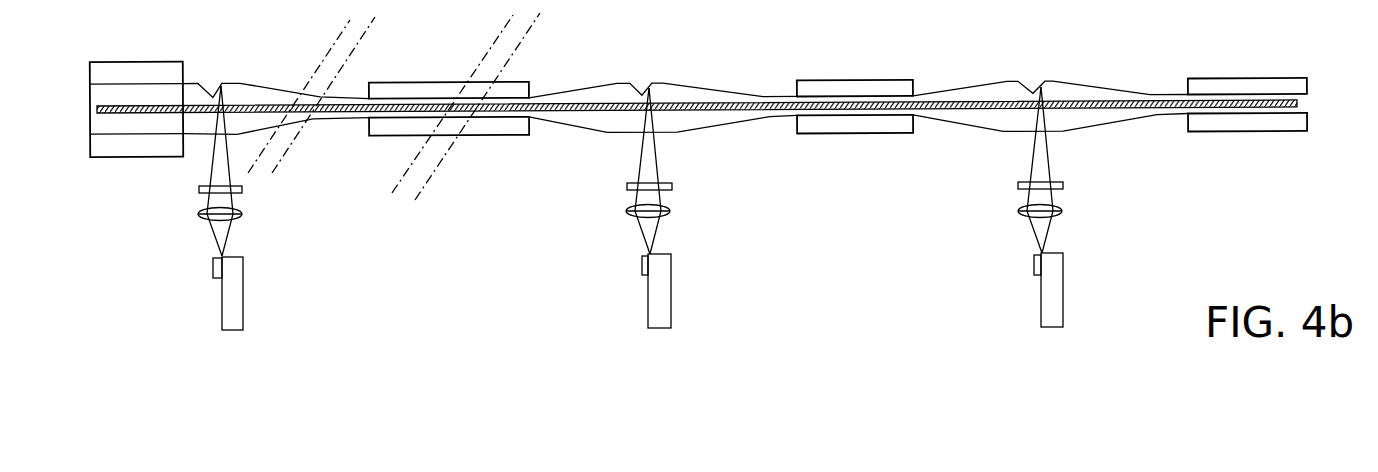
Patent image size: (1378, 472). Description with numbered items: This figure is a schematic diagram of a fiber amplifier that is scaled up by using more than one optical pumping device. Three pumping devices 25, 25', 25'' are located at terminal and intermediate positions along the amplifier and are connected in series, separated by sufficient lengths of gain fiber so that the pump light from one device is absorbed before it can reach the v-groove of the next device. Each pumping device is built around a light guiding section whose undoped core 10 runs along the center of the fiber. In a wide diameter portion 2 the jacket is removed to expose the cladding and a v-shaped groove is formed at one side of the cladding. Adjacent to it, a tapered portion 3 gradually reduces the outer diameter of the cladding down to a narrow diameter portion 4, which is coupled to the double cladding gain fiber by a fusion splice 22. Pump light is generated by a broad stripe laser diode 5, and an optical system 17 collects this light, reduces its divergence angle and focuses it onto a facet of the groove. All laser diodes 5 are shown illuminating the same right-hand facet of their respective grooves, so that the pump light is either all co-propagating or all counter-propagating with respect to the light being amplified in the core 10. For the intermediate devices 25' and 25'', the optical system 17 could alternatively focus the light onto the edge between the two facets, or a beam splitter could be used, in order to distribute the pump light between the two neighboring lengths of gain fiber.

The core 10 is at (152, 113).
The wide diameter portion 2 is at (198, 125).
The tapered portion 3 is at (258, 125).
The narrow diameter portion 4 is at (345, 113).
The fusion splice 22 is at (353, 118).
The optical system 17 is at (668, 223).
The broad stripe pump laser diode 5 is at (237, 286).
The pumping device 25 is at (187, 273).
The pumping device 25' is at (601, 285).
The pumping device 25'' is at (1010, 275).